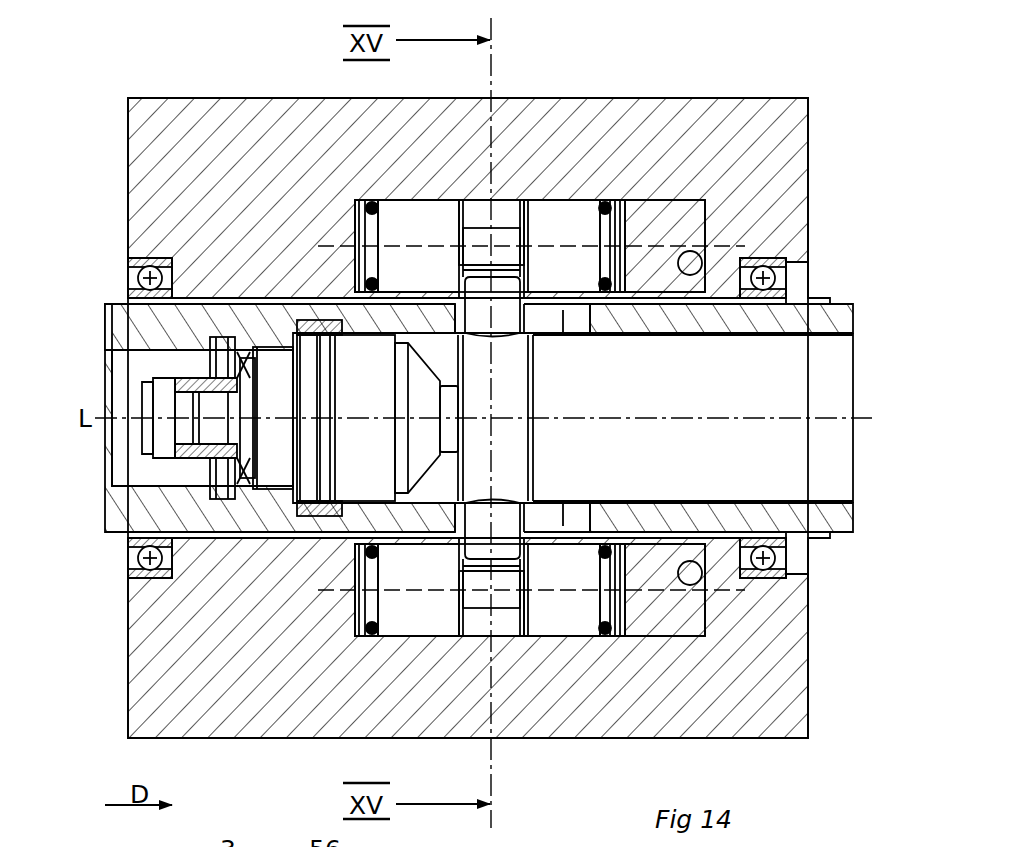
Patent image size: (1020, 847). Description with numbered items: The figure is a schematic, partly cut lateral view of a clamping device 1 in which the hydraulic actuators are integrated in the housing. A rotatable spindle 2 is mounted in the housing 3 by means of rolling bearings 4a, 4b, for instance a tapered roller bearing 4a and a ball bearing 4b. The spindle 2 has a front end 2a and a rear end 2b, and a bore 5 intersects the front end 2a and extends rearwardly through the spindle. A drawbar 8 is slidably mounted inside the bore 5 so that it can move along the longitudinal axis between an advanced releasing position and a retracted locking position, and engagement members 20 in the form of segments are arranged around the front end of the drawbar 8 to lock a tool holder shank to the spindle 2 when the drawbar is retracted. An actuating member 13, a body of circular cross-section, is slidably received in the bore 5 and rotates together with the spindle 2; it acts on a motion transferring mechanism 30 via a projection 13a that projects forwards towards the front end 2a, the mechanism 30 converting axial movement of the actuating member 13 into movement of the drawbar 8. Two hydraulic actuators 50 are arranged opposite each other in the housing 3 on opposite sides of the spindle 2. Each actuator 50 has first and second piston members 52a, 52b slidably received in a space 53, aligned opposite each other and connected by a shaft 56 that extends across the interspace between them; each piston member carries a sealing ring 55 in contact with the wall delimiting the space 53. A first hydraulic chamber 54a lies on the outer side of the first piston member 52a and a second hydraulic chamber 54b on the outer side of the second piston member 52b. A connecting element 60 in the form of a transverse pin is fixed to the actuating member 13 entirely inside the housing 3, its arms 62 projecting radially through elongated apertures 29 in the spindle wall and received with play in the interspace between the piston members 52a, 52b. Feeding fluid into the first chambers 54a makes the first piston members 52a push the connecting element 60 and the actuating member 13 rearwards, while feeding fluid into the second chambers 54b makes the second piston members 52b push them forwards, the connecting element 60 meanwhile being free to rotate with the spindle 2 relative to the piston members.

The clamping device 1 is at (672, 82).
The spindle 2 is at (110, 523).
The front end 2a is at (113, 296).
The rear end 2b is at (834, 296).
The housing 3 is at (162, 105).
The rolling bearing 4a is at (145, 558).
The rolling bearing 4b is at (780, 555).
The bore 5 is at (125, 363).
The drawbar 8 is at (185, 432).
The actuating member 13 is at (513, 432).
The projection 13a is at (445, 410).
The engagement members 20 is at (190, 376).
The apertures 29 is at (557, 325).
The motion transferring mechanism 30 is at (380, 506).
The hydraulic actuators 50 is at (720, 214).
The first piston member 52a is at (440, 208).
The second piston member 52b is at (553, 207).
The space 53 is at (497, 238).
The first hydraulic chamber 54a is at (366, 204).
The second hydraulic chamber 54b is at (658, 282).
The sealing ring 55 is at (377, 208).
The shaft 56 is at (512, 240).
The connecting element 60 is at (525, 302).
The arms 62 is at (478, 292).